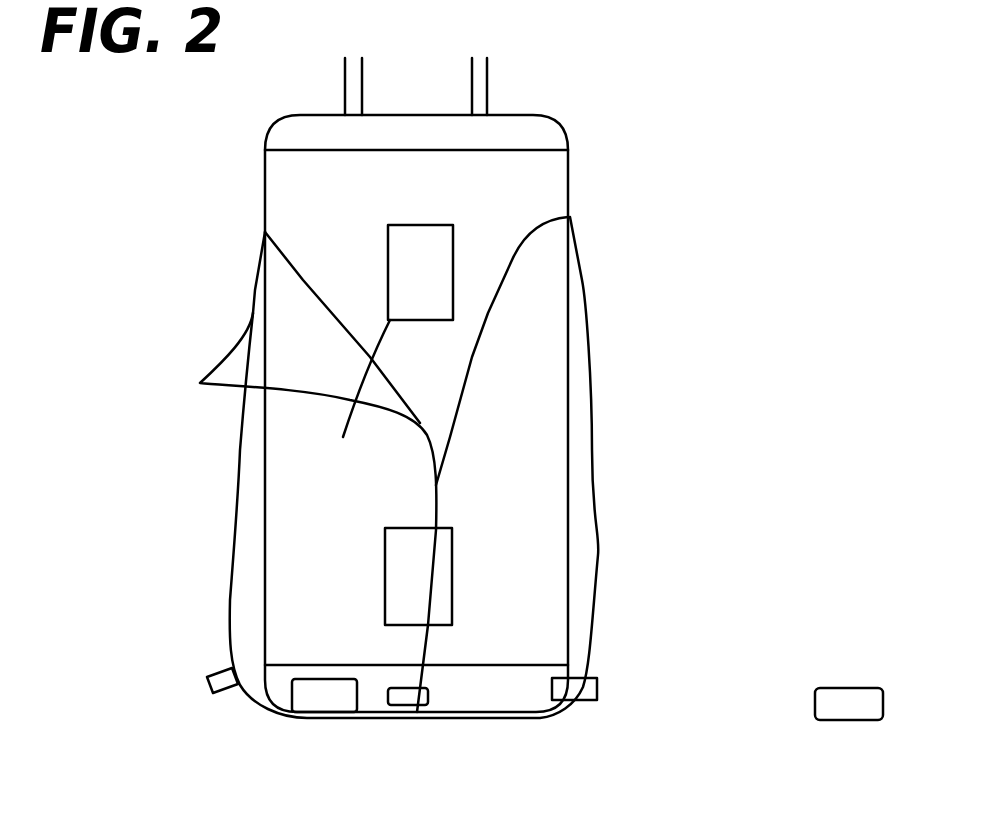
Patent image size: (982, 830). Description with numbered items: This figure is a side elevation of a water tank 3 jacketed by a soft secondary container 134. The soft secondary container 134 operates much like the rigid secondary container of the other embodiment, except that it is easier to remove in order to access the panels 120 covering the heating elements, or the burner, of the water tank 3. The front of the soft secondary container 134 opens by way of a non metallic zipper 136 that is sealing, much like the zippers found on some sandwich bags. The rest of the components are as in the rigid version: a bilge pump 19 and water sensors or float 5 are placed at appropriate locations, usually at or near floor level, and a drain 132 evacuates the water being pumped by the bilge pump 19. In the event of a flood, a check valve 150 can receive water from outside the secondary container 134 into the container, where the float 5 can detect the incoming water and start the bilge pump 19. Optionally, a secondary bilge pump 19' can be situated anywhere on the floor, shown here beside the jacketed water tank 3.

The child seat 3 is at (582, 138).
The seat cover 134 is at (587, 395).
The cover opening flap 136 is at (437, 503).
The sensor module 120 is at (385, 545).
The sensor 5 is at (412, 707).
The control unit 19 is at (317, 735).
The remote control unit 19' is at (837, 750).
The fastening strap 132 is at (206, 681).
The connector 150 is at (580, 688).